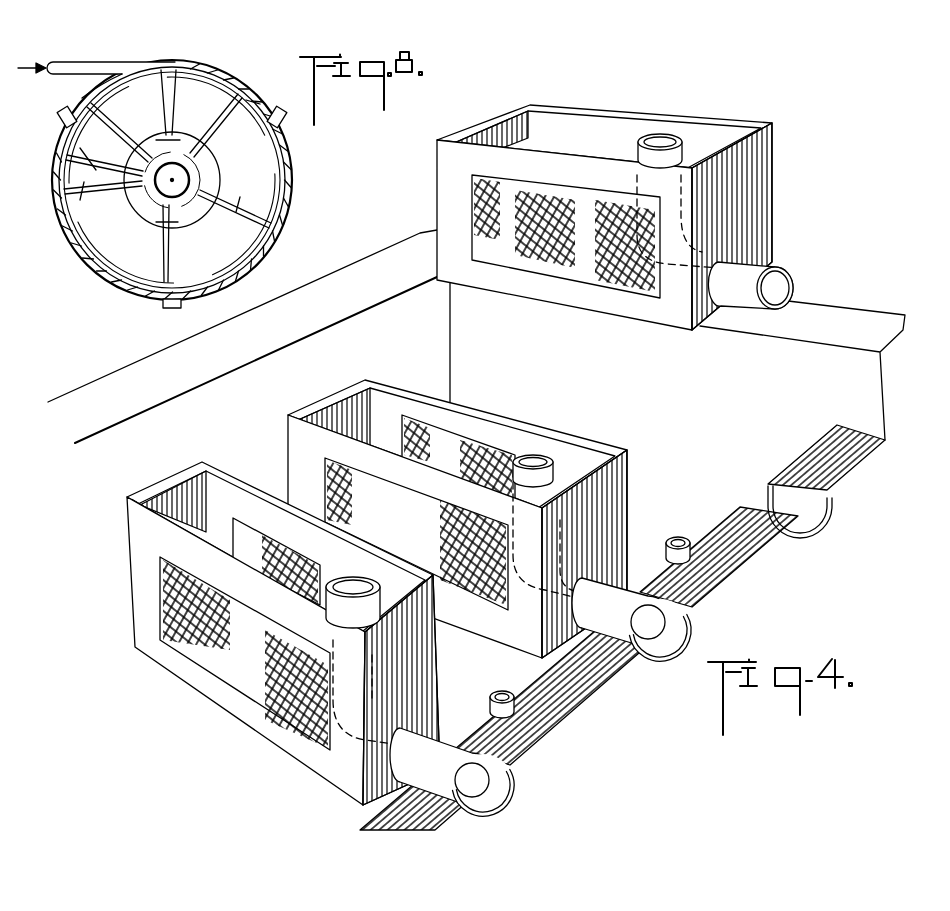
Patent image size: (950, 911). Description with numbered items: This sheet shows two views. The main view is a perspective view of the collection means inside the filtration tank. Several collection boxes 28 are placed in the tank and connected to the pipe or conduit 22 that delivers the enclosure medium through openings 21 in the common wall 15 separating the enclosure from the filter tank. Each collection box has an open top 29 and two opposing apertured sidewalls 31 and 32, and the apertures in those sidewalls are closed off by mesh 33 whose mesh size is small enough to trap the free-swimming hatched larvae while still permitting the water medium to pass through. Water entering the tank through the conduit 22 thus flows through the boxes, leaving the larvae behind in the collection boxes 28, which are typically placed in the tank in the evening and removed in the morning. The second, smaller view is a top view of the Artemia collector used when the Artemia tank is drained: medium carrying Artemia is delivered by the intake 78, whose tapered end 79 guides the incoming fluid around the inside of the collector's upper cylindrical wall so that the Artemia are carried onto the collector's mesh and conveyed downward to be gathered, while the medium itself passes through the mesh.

In FIG. 4, the common wall 15 is at (735, 560).
In FIG. 4, the openings 21 is at (692, 623).
In FIG. 4, the pipe or conduit 22 is at (625, 595).
In FIG. 4, the collection boxes 28 is at (613, 483).
In FIG. 4, the open tops 29 is at (383, 403).
In FIG. 4, the apertured sidewall 31 is at (290, 432).
In FIG. 4, the apertured sidewall 32 is at (450, 415).
In FIG. 4, the mesh 33 is at (325, 482).
In FIG. 8, the intake 78 is at (110, 62).
In FIG. 8, the tapered end 79 is at (165, 60).